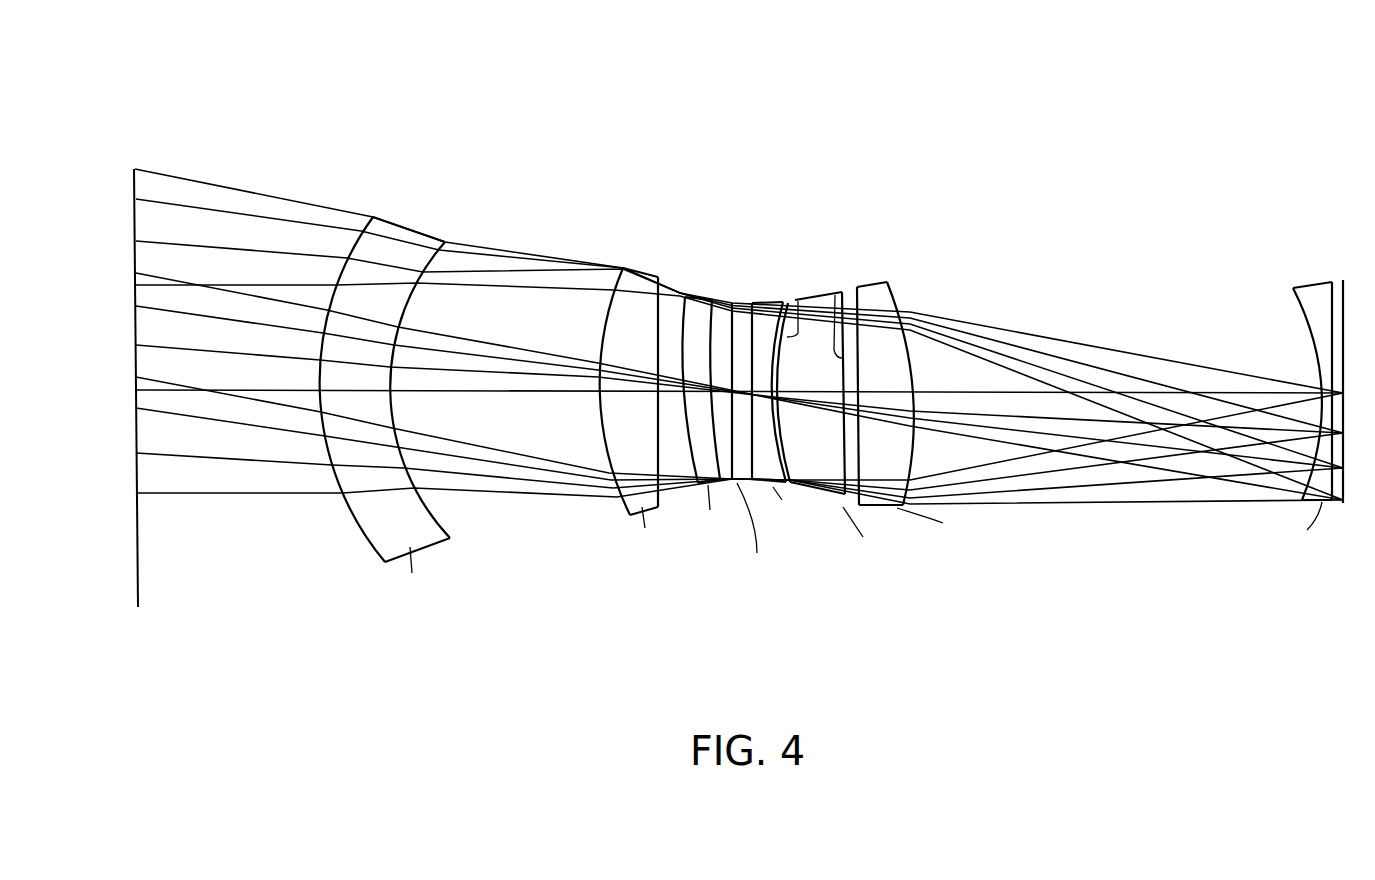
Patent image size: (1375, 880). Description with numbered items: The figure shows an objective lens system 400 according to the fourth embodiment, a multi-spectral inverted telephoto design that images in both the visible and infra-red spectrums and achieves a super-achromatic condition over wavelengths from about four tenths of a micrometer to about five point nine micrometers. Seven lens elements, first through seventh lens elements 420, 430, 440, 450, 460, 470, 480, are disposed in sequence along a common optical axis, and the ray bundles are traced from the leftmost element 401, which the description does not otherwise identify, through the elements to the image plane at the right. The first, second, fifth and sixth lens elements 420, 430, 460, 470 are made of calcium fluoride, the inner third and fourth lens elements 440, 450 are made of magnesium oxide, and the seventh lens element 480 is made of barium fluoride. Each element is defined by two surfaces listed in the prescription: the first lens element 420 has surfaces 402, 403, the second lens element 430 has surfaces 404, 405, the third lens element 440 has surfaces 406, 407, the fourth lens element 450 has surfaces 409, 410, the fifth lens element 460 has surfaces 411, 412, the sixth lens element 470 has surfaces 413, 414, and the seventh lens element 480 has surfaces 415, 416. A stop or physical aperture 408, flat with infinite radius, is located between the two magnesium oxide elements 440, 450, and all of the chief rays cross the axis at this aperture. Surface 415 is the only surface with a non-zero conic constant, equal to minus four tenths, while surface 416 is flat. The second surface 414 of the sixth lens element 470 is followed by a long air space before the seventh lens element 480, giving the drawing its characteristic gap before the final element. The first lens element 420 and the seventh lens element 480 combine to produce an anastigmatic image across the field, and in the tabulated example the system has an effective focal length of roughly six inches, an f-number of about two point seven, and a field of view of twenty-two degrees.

The objective lens system 400 is at (696, 127).
The object plane 401 is at (130, 188).
The surface 402 is at (365, 230).
The surface 403 is at (437, 250).
The surface 404 is at (623, 267).
The surface 405 is at (660, 277).
The surface 406 is at (690, 295).
The surface 407 is at (708, 305).
The stop or physical aperture 408 is at (752, 302).
The surface 409 is at (783, 300).
The surface 410 is at (800, 300).
The surface 411 is at (837, 292).
The surface 412 is at (857, 287).
The surface 413 is at (858, 287).
The surface 414 is at (898, 300).
The surface 415 is at (1307, 310).
The surface 416 is at (1328, 302).
The first lens element 420 is at (412, 375).
The second lens element 430 is at (618, 385).
The third lens element 440 is at (719, 420).
The fourth lens element 450 is at (799, 374).
The fifth lens element 460 is at (858, 396).
The sixth lens element 470 is at (939, 368).
The seventh lens element 480 is at (1257, 410).